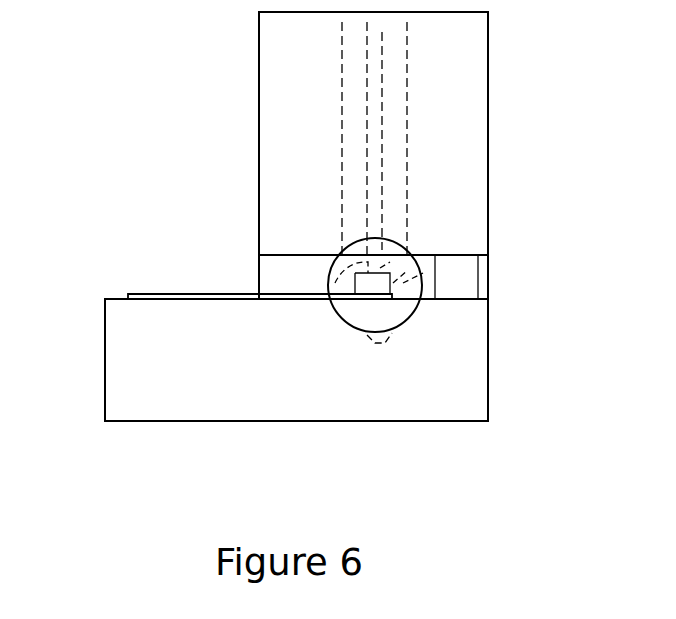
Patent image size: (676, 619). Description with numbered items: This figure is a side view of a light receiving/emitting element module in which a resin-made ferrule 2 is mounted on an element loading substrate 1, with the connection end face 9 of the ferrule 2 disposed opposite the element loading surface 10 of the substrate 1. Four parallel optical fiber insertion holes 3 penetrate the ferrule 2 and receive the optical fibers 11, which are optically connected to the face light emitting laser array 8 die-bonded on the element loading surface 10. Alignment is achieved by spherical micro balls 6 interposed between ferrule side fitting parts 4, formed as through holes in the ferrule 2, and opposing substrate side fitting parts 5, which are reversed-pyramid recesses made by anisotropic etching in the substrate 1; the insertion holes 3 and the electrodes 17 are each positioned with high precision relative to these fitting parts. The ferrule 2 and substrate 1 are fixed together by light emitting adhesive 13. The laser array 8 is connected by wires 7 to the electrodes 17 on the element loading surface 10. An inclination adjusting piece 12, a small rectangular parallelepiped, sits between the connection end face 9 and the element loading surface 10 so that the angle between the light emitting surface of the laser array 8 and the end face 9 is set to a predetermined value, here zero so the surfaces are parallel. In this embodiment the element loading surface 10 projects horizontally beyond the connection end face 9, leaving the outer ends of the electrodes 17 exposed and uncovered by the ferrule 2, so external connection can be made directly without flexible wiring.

The element loading substrate 1 is at (215, 397).
The ferrule 2 is at (288, 38).
The optical fiber insertion holes 3 is at (377, 117).
The ferrule side fitting parts 4 is at (407, 197).
The substrate side fitting parts 5 is at (357, 336).
The micro balls 6 is at (400, 297).
The wires 7 is at (323, 252).
The face light emitting laser array 8 is at (423, 273).
The connection end face 9 is at (281, 255).
The element loading surface 10 is at (484, 287).
The optical fibers 11 is at (408, 270).
The inclination adjusting piece 12 is at (452, 300).
The light emitting adhesive 13 is at (283, 270).
The electrodes 17 is at (135, 293).